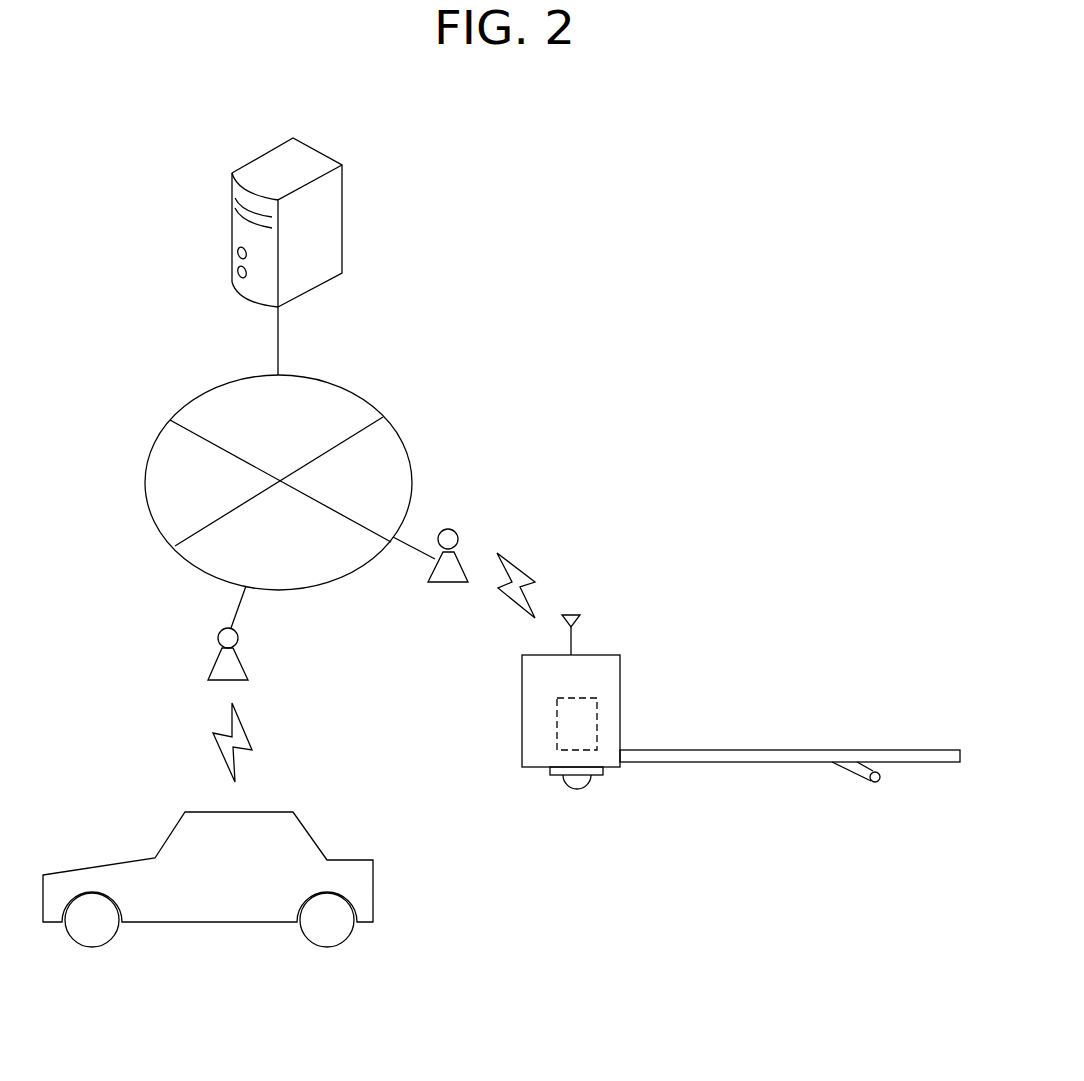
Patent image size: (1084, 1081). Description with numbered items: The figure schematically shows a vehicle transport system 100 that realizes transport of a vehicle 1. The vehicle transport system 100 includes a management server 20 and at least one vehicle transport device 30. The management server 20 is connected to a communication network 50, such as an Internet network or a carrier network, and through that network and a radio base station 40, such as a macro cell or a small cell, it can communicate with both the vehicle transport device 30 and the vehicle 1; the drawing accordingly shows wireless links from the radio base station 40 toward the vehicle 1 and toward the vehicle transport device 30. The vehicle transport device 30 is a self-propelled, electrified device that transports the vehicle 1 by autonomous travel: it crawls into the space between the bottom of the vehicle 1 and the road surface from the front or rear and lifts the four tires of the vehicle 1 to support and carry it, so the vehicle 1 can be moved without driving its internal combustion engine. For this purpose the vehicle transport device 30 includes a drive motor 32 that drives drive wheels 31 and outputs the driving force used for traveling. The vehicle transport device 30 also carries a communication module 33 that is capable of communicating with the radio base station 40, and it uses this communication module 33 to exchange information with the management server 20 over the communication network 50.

The vehicle 1 is at (168, 832).
The management server 20 is at (343, 215).
The vehicle transport device 30 is at (700, 744).
The drive wheels 31 is at (577, 784).
The drive motor 32 is at (597, 713).
The communication module 33 is at (578, 623).
The radio base station 40 is at (463, 557).
The communication network 50 is at (355, 572).
The vehicle transport system 100 is at (692, 328).